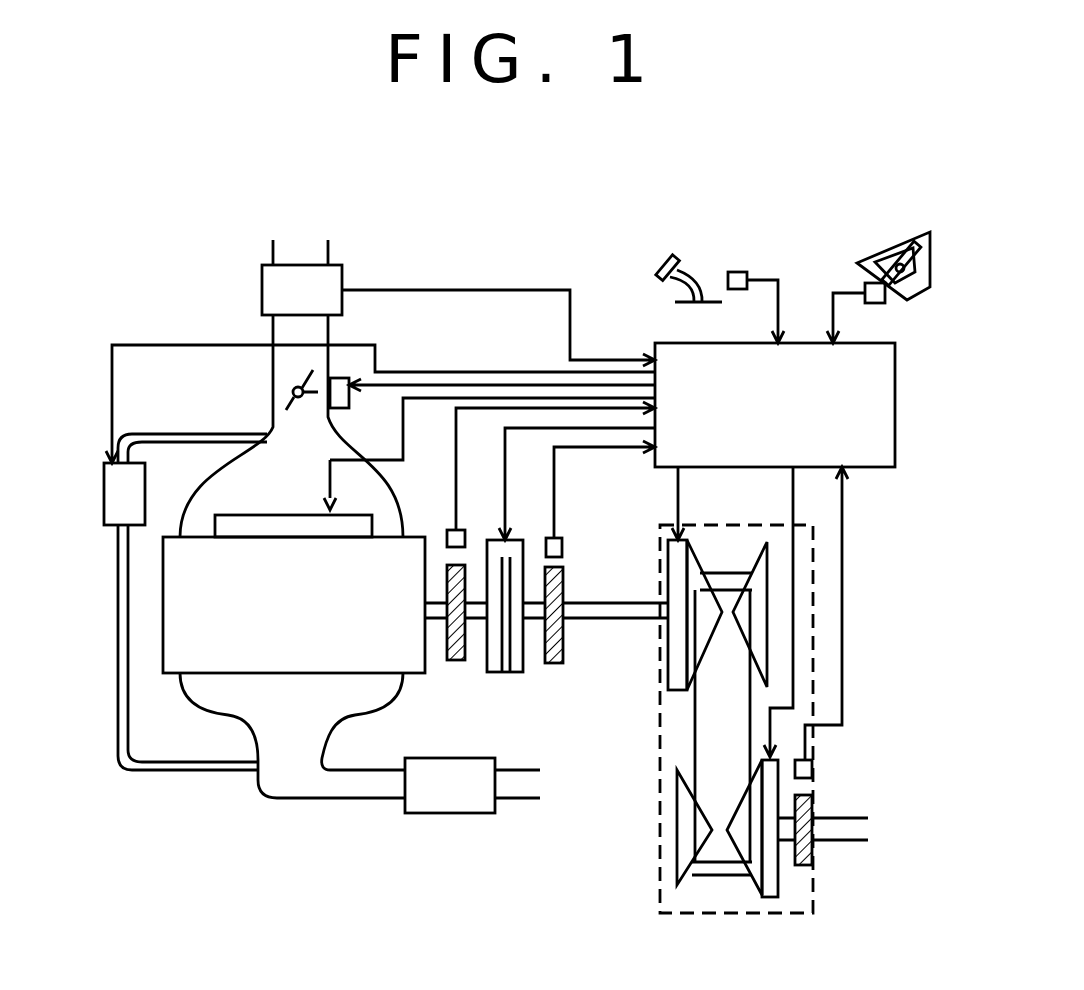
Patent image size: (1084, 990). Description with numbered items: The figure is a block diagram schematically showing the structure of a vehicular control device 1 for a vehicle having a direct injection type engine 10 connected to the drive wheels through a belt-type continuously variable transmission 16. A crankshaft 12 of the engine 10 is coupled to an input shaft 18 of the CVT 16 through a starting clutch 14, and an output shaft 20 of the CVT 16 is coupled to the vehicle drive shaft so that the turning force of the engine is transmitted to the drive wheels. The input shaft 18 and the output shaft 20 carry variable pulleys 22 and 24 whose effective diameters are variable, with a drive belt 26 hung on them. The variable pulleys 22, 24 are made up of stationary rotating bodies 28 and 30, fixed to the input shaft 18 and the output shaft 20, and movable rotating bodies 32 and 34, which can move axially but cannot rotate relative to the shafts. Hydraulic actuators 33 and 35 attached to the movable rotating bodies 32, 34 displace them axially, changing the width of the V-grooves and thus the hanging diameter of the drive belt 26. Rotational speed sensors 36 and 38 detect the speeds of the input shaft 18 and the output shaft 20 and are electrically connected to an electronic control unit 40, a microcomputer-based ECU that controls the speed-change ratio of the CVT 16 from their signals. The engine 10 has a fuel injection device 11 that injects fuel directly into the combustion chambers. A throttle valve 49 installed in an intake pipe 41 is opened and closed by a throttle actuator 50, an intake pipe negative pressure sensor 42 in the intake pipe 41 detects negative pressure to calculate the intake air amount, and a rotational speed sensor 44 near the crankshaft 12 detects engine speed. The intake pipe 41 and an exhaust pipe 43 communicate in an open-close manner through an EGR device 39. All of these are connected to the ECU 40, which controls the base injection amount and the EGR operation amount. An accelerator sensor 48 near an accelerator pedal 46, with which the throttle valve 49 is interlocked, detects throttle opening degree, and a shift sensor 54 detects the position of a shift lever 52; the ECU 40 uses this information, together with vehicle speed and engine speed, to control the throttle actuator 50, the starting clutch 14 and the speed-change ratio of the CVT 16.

The vehicular control device 1 is at (951, 233).
The engine 10 is at (170, 675).
The fuel injection device 11 is at (268, 537).
The crankshaft 12 is at (430, 672).
The starting clutch 14 is at (495, 535).
The continuously variable transmission 16 is at (678, 913).
The input shaft 18 is at (602, 618).
The output shaft 20 is at (850, 830).
The variable pulley 22 is at (750, 629).
The variable pulley 24 is at (669, 875).
The drive belt 26 is at (733, 705).
The stationary rotating body 28 is at (760, 615).
The stationary rotating body 30 is at (676, 830).
The movable rotating body 32 is at (690, 595).
The hydraulic actuator 33 is at (678, 553).
The movable rotating body 34 is at (732, 855).
The hydraulic actuator 35 is at (780, 885).
The rotational speed sensor 36 is at (562, 545).
The rotational speed sensor 38 is at (812, 768).
The EGR device 39 is at (138, 462).
The electronic control unit 40 is at (895, 436).
The intake pipe 41 is at (272, 333).
The intake pipe negative pressure sensor 42 is at (342, 277).
The exhaust pipe 43 is at (322, 800).
The rotational speed sensor 44 is at (447, 530).
The accelerator pedal 46 is at (663, 260).
The accelerator sensor 48 is at (738, 270).
The throttle valve 49 is at (272, 410).
The throttle actuator 50 is at (345, 408).
The shift lever 52 is at (896, 238).
The shift sensor 54 is at (885, 300).